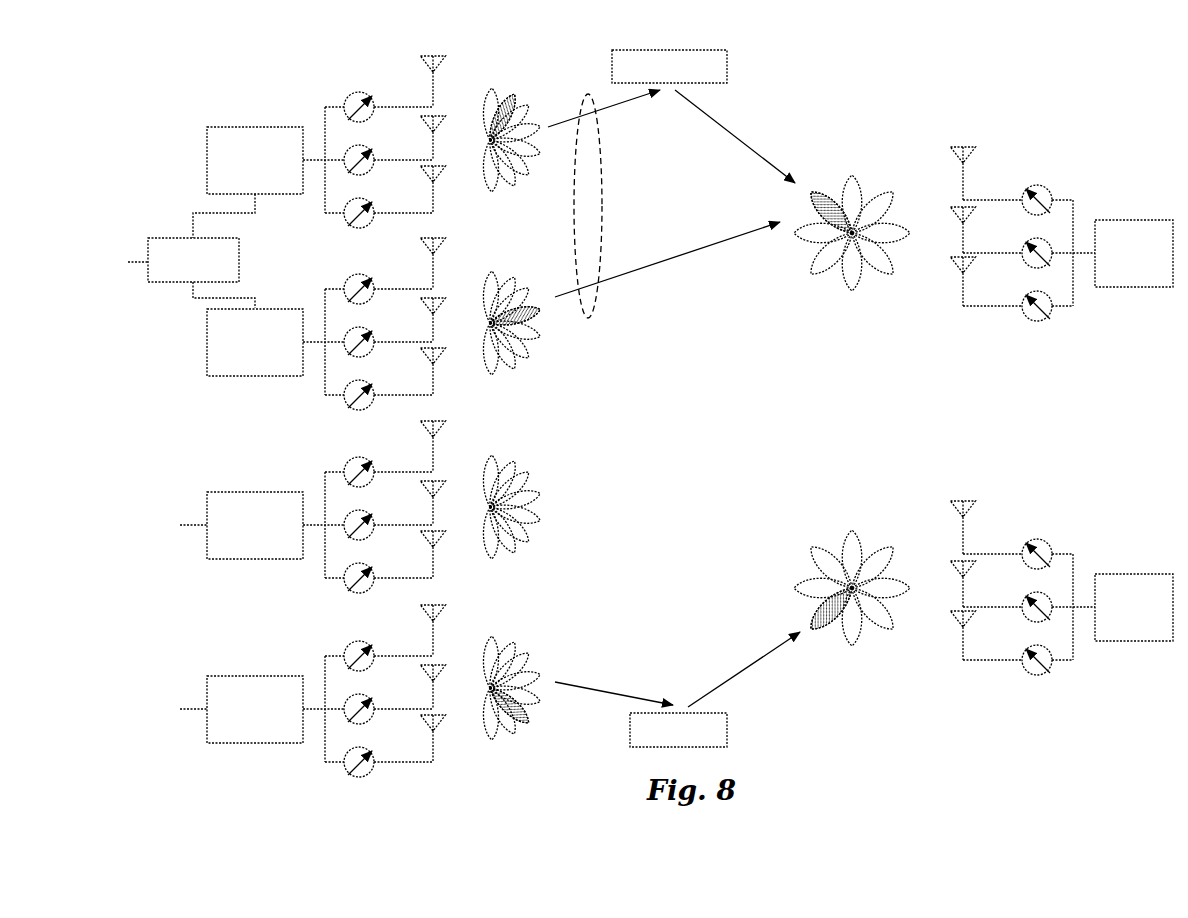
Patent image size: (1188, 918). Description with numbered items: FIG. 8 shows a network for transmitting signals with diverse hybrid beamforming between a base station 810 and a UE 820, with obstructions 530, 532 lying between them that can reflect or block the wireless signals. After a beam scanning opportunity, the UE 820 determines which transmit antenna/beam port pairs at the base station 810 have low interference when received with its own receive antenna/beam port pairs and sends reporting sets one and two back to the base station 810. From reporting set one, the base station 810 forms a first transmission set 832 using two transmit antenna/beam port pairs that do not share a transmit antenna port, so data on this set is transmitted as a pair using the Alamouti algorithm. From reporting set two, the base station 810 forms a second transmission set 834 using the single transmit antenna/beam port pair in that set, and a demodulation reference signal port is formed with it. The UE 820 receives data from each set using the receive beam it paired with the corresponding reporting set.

The base station 810 is at (198, 72).
The UE 820 is at (1105, 72).
The obstruction 530 is at (669, 66).
The obstruction 532 is at (678, 730).
The first transmission set 832 is at (622, 205).
The second transmission set 834 is at (610, 680).